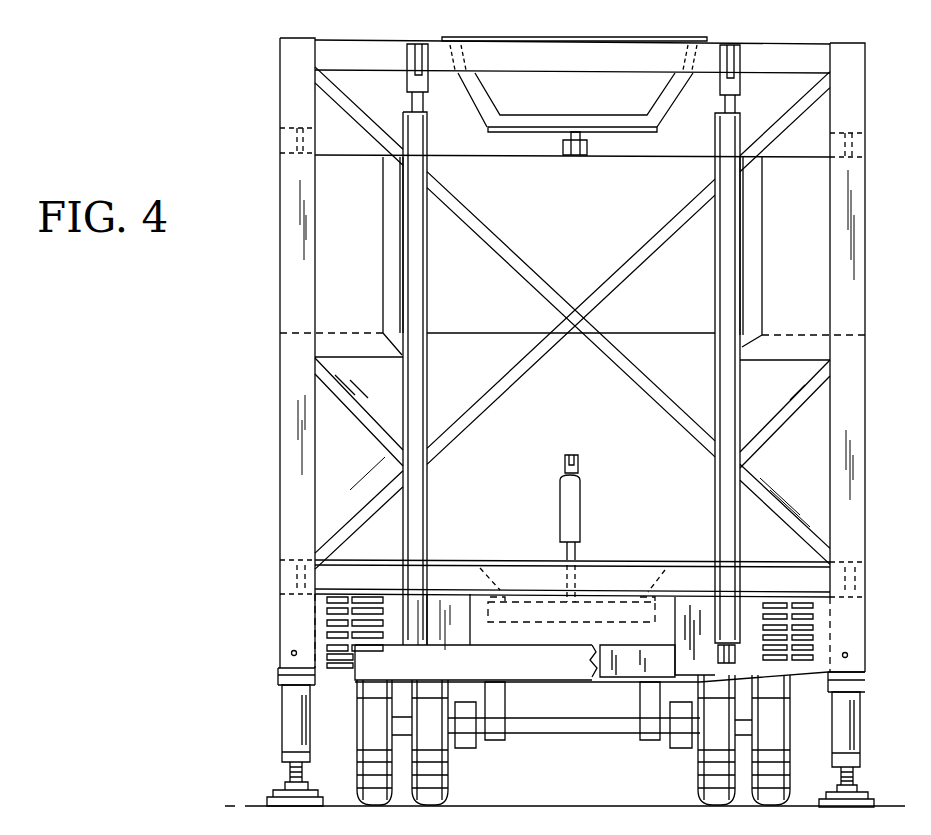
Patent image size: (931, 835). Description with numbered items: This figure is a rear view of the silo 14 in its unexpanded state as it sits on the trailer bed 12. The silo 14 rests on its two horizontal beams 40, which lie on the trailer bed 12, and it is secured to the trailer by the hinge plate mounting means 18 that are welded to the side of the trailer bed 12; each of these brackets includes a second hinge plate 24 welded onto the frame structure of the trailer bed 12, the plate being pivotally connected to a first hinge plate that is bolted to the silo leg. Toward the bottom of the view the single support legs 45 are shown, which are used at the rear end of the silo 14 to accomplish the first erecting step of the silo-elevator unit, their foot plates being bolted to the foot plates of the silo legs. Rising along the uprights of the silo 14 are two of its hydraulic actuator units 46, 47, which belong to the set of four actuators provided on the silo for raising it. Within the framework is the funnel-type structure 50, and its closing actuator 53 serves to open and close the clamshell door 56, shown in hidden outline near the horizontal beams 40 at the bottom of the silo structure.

The trailer bed 12 is at (583, 678).
The silo 14 is at (325, 56).
The hinge plate mounting means 18 is at (288, 620).
The second hinge plate 24 is at (393, 612).
The horizontal beams 40 is at (512, 569).
The single support legs 45 is at (290, 726).
The hydraulic actuator unit 46 is at (716, 364).
The hydraulic actuator unit 47 is at (428, 362).
The funnel-type structure 50 is at (385, 448).
The closing actuator 53 is at (581, 501).
The clamshell door 56 is at (488, 614).